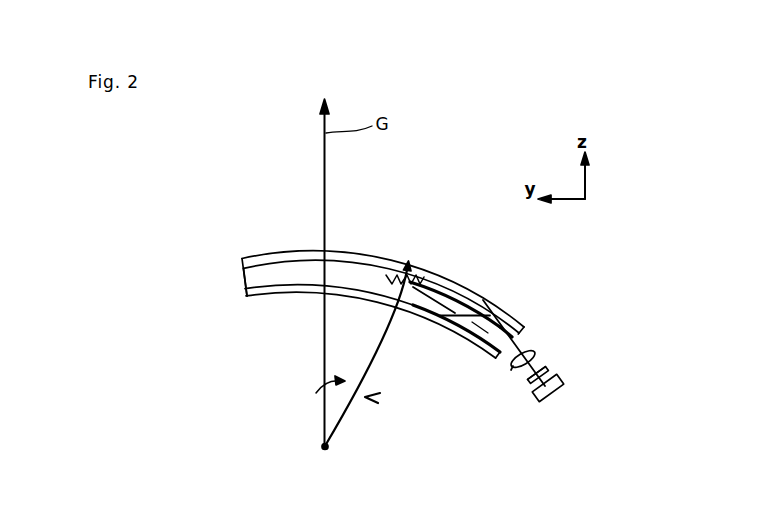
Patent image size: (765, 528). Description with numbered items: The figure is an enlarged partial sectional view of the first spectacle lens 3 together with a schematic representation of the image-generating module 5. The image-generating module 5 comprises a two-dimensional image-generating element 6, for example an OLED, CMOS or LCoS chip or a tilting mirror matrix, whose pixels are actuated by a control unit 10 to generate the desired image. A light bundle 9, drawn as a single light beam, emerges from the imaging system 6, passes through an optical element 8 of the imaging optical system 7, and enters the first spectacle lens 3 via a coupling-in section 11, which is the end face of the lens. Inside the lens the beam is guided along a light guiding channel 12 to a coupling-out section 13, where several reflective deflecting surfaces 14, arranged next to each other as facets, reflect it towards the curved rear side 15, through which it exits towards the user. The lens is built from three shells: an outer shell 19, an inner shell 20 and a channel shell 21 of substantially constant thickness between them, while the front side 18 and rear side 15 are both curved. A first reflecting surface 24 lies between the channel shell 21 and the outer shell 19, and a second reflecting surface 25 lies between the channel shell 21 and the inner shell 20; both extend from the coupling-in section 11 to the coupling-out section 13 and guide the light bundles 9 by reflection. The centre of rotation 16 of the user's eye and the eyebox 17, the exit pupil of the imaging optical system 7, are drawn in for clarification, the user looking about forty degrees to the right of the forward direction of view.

The first spectacle lens 3 is at (236, 278).
The image-generating module 5 is at (559, 361).
The image-generating element 6 is at (551, 371).
The imaging optical system 7 is at (545, 345).
The optical element 8 is at (513, 371).
The light bundle 9 is at (523, 341).
The control unit 10 is at (544, 405).
The coupling-in section 11 is at (473, 340).
The light guiding channel 12 is at (458, 322).
The coupling-out section 13 is at (412, 262).
The reflective deflecting surfaces 14 is at (387, 273).
The rear side 15 is at (257, 302).
The centre of rotation 16 is at (328, 449).
The eyebox 17 is at (316, 393).
The front side 18 is at (262, 253).
The outer shell 19 is at (293, 259).
The inner shell 20 is at (300, 292).
The channel shell 21 is at (247, 290).
The first reflecting surface 24 is at (487, 303).
The second reflecting surface 25 is at (485, 336).